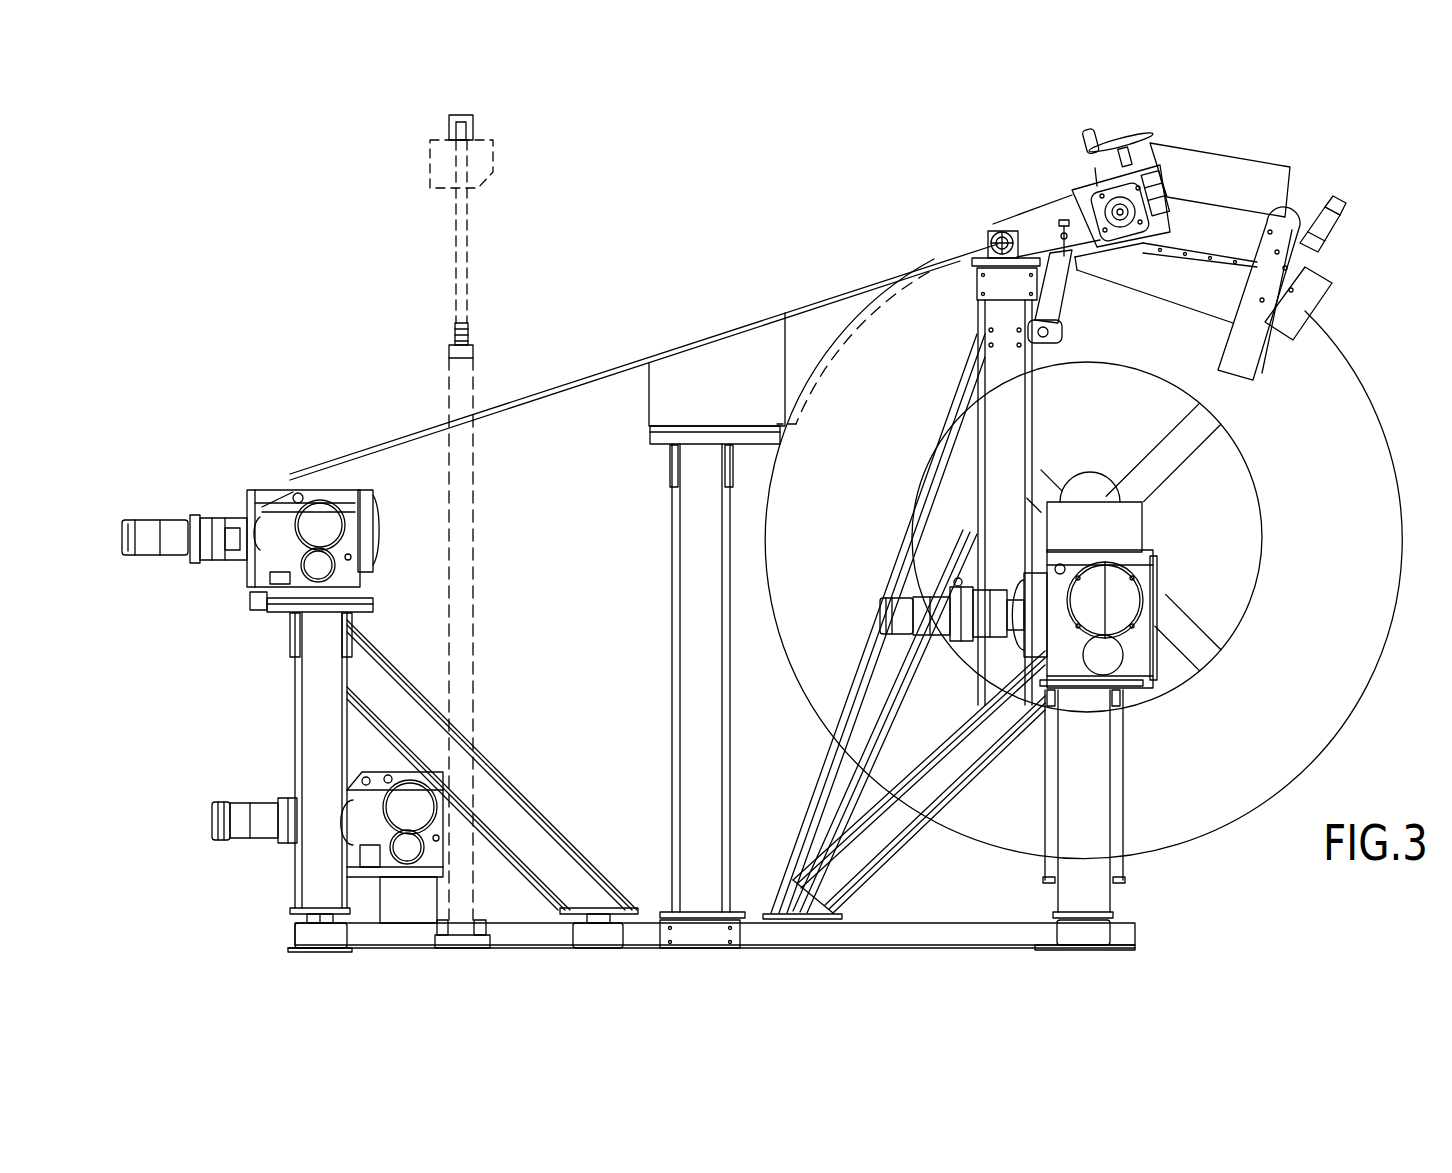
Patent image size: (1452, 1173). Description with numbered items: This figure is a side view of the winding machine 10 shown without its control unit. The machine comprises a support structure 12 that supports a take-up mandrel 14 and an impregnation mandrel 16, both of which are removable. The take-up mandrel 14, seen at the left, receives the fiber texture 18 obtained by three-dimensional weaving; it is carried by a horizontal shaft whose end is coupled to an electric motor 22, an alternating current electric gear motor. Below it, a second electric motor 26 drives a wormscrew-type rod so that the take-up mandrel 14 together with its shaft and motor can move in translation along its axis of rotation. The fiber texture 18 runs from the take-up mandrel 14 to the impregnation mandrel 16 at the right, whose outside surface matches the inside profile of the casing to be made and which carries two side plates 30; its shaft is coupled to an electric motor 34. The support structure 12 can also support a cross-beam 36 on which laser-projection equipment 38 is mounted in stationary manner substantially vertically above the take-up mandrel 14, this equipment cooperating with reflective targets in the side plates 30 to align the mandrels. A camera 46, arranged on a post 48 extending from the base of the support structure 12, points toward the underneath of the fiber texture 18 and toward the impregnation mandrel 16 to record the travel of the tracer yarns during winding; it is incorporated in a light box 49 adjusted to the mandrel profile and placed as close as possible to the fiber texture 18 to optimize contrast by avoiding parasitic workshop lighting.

The winding machine 10 is at (885, 183).
The support structure 12 is at (801, 800).
The take-up mandrel 14 is at (283, 470).
The impregnation mandrel 16 is at (1377, 405).
The fiber texture 18 is at (596, 374).
The electric motor 22 is at (278, 550).
The electric motor 26 is at (410, 800).
The side plates 30 is at (764, 523).
The electric motor 34 is at (1141, 595).
The cross-beam 36 is at (462, 272).
The laser-projection equipment 38 is at (512, 151).
The camera 46 is at (765, 381).
The post 48 is at (690, 752).
The light box 49 is at (648, 413).